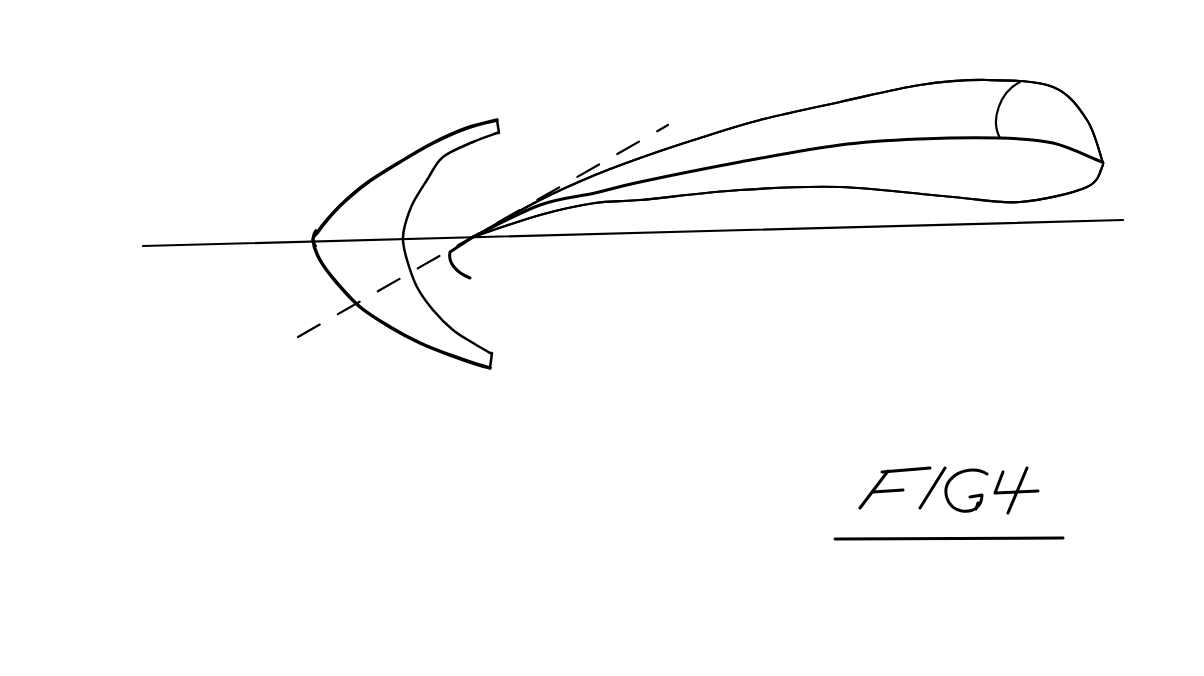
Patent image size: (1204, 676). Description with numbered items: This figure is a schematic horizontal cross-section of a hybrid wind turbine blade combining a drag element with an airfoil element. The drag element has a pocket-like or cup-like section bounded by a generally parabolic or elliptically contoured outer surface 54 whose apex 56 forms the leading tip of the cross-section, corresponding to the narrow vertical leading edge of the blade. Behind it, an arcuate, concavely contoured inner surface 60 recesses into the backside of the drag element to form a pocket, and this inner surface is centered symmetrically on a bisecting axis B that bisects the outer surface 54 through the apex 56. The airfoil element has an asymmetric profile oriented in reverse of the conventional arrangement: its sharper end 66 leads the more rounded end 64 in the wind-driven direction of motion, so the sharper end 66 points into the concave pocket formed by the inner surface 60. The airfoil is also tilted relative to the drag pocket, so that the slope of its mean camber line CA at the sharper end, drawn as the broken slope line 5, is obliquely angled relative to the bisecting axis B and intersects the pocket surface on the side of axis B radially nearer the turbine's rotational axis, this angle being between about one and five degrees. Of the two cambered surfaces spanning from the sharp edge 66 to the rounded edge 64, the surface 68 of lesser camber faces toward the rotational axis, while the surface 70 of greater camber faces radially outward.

The outer surface 54 is at (400, 336).
The apex 56 is at (311, 237).
The inner surface 60 is at (423, 185).
The rounded end 64 is at (1110, 160).
The sharper end 66 is at (470, 278).
The surface of lesser camber 68 is at (743, 191).
The surface of greater camber 70 is at (787, 114).
The tangent line 5 is at (644, 134).
The bisecting axis B is at (773, 237).
The mean camber line CA is at (1040, 60).